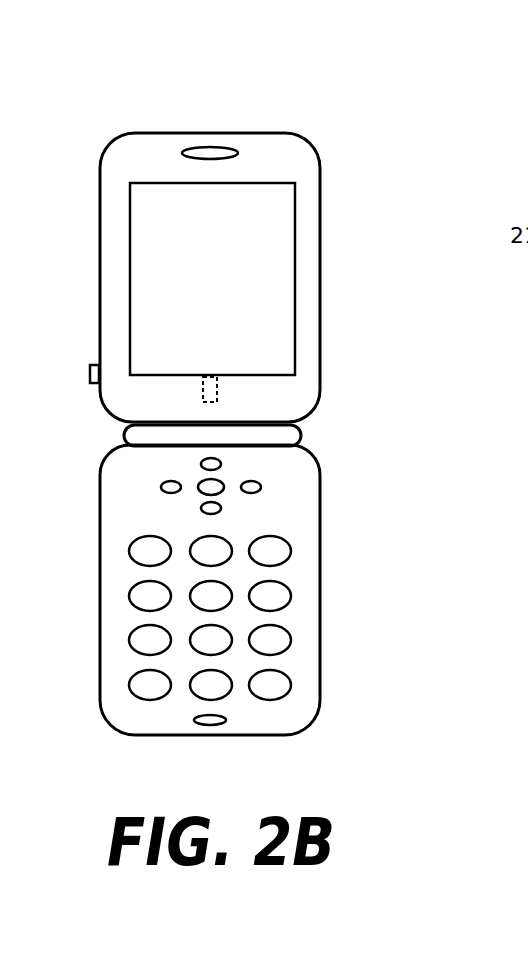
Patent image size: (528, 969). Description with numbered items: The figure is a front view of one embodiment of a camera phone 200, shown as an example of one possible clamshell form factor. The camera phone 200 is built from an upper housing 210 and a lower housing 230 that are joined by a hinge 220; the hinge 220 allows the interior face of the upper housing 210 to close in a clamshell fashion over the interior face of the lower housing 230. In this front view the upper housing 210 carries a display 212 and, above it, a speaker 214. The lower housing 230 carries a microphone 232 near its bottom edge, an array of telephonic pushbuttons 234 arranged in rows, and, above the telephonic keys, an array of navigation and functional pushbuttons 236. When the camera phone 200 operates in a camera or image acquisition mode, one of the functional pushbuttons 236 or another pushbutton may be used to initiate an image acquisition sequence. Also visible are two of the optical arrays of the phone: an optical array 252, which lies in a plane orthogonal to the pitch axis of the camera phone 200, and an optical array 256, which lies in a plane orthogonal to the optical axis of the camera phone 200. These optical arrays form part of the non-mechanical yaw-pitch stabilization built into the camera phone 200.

The camera phone 200 is at (527, 142).
The upper housing 210 is at (308, 293).
The display 212 is at (192, 356).
The speaker 214 is at (180, 155).
The hinge 220 is at (272, 435).
The lower housing 230 is at (320, 608).
The microphone 232 is at (240, 723).
The array of telephonic pushbuttons 234 is at (118, 605).
The array of navigation and functional pushbuttons 236 is at (283, 485).
The optical array 252 is at (222, 388).
The optical array 256 is at (97, 367).